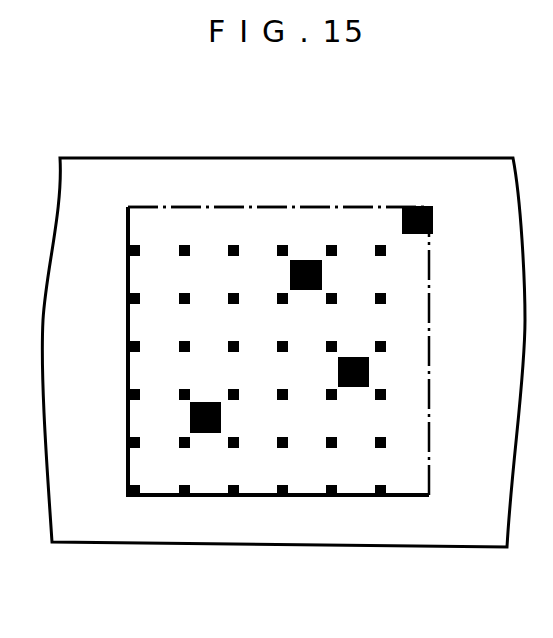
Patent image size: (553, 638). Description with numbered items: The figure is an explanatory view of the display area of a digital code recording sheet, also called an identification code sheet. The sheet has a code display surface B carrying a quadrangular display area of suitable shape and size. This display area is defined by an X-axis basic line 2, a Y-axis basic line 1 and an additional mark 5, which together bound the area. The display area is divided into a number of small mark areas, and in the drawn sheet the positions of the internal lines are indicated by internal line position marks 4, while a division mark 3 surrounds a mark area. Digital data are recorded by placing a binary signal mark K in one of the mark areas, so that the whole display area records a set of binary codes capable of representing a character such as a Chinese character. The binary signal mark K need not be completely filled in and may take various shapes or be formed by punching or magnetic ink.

The Y-axis basic line 1 is at (128, 333).
The X-axis basic line 2 is at (355, 497).
The division mark 3 is at (185, 447).
The internal line position mark 4 is at (283, 497).
The additional mark 5 is at (417, 207).
The code display surface B is at (272, 207).
The binary signal mark K is at (369, 372).